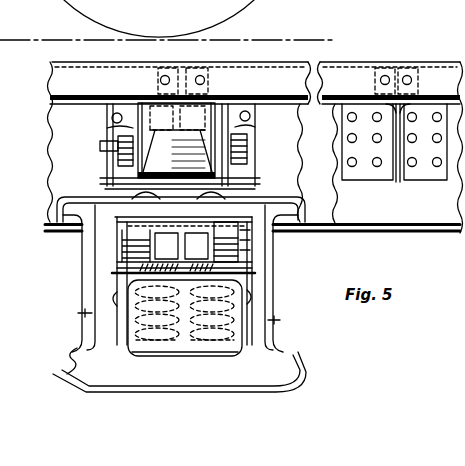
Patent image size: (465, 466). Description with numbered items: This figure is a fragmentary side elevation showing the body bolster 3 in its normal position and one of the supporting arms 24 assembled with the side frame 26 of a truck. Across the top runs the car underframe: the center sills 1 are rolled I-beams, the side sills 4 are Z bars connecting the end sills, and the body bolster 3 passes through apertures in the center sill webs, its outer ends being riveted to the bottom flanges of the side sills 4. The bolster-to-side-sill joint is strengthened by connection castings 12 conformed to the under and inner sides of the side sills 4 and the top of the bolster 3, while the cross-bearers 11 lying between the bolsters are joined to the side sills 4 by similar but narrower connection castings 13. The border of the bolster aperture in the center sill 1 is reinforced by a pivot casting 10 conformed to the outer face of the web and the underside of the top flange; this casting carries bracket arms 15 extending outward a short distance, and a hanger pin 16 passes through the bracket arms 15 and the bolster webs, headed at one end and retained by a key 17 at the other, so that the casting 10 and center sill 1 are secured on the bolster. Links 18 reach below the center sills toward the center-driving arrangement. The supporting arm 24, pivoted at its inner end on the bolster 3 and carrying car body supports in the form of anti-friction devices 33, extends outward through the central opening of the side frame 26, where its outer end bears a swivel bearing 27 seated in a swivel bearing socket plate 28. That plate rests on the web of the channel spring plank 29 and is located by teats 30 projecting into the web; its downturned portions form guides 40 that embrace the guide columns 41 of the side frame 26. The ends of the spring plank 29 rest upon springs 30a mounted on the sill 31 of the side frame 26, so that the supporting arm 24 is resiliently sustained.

The center sills 1 is at (333, 153).
The body bolster 3 is at (176, 140).
The side sills 4 is at (60, 75).
The pivot casting 10 is at (136, 102).
The cross-bearers 11 is at (398, 184).
The connection castings 12 is at (212, 77).
The connection castings 13 is at (374, 81).
The bracket arms 15 is at (108, 124).
The hanger pin 16 is at (118, 156).
The key 17 is at (116, 144).
The links 18 is at (107, 183).
The supporting arms 24 is at (140, 244).
The side frames 26 is at (66, 360).
The swivel bearing 27 is at (150, 268).
The swivel bearing socket plate 28 is at (245, 266).
The spring plank 29 is at (252, 285).
The teats 30 is at (135, 331).
The springs 30a is at (239, 338).
The sill 31 is at (179, 372).
The anti-friction devices 33 is at (210, 205).
The guides 40 is at (115, 296).
The guide columns 41 is at (78, 313).